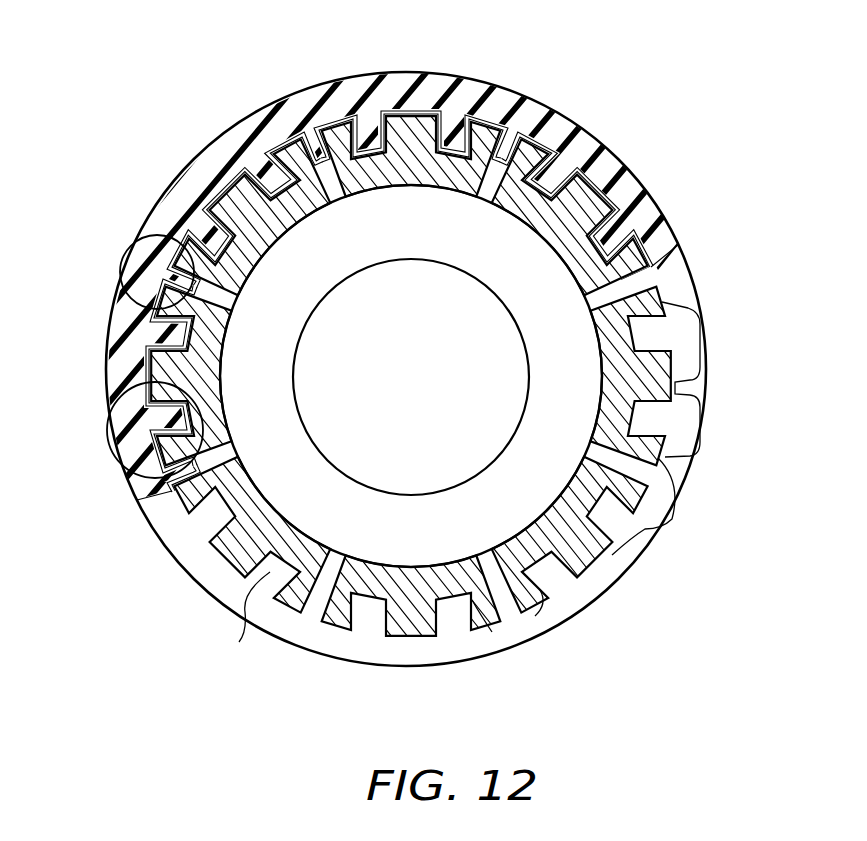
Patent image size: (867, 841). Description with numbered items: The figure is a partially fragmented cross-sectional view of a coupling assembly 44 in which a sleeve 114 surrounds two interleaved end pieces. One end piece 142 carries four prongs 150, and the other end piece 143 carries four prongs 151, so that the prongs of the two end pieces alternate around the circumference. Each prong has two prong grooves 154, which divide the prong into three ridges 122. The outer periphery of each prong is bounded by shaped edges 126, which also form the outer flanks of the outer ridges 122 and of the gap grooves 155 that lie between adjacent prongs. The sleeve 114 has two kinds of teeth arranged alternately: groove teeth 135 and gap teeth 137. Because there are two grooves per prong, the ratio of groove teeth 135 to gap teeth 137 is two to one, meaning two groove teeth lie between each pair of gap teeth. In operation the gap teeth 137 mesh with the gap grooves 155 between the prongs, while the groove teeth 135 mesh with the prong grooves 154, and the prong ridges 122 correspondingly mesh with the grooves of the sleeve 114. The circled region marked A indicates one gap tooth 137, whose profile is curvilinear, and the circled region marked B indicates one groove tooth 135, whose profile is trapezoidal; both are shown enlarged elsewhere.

The housing 44 is at (616, 594).
The sleeve 114 is at (263, 108).
The ridges 122 is at (700, 392).
The shaped edges 126 is at (525, 610).
The groove teeth 135 is at (468, 145).
The gap teeth 137 is at (318, 140).
The end piece 142 is at (420, 255).
The end piece 143 is at (567, 235).
The prongs 150 is at (478, 616).
The prongs 151 is at (637, 537).
The prong grooves 154 is at (460, 612).
The gap grooves 155 is at (310, 607).
The enlarged view location A is at (130, 252).
The enlarged view location B is at (105, 445).